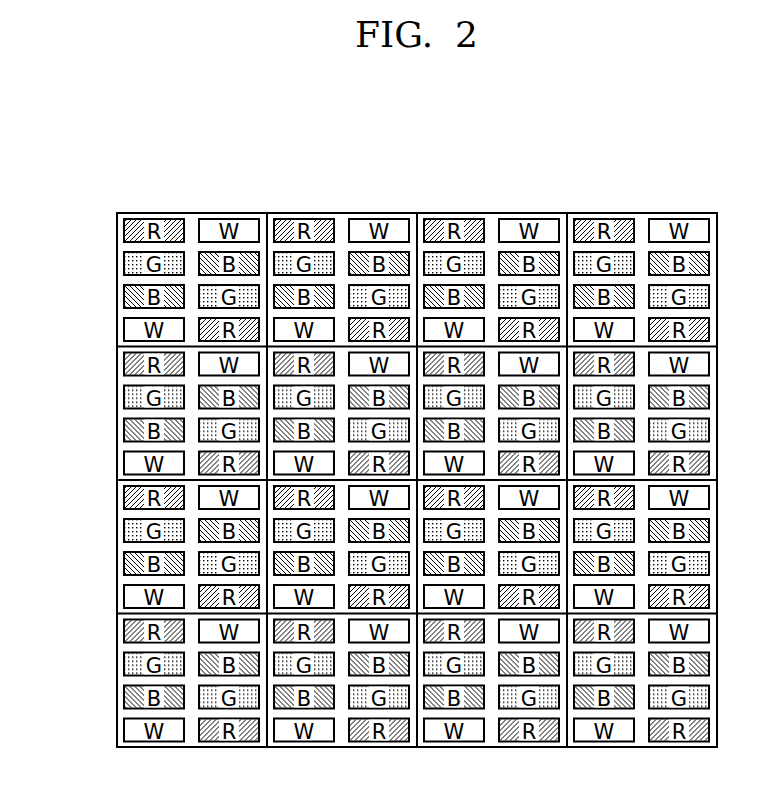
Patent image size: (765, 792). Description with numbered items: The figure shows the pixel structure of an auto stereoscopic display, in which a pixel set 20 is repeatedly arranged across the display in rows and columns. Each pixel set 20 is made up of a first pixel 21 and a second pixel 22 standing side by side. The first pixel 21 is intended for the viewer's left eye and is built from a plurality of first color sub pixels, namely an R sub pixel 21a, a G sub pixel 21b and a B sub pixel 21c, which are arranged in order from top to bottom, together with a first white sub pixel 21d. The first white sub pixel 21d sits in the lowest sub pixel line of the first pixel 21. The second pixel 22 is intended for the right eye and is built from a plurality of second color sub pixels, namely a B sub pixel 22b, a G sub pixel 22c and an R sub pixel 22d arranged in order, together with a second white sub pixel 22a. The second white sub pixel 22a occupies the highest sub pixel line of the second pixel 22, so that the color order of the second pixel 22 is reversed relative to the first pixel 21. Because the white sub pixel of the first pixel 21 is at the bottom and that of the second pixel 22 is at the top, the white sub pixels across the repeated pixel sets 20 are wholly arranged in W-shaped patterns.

The pixel set 20 is at (148, 201).
The first pixel 21 is at (55, 225).
The R sub pixel 21a is at (123, 230).
The G sub pixel 21b is at (123, 264).
The B sub pixel 21c is at (123, 296).
The first white sub pixel 21d is at (123, 330).
The second pixel 22 is at (267, 173).
The second white sub pixel 22a is at (261, 264).
The B sub pixel 22b is at (261, 296).
The G sub pixel 22c is at (261, 330).
The R sub pixel 22d is at (261, 230).